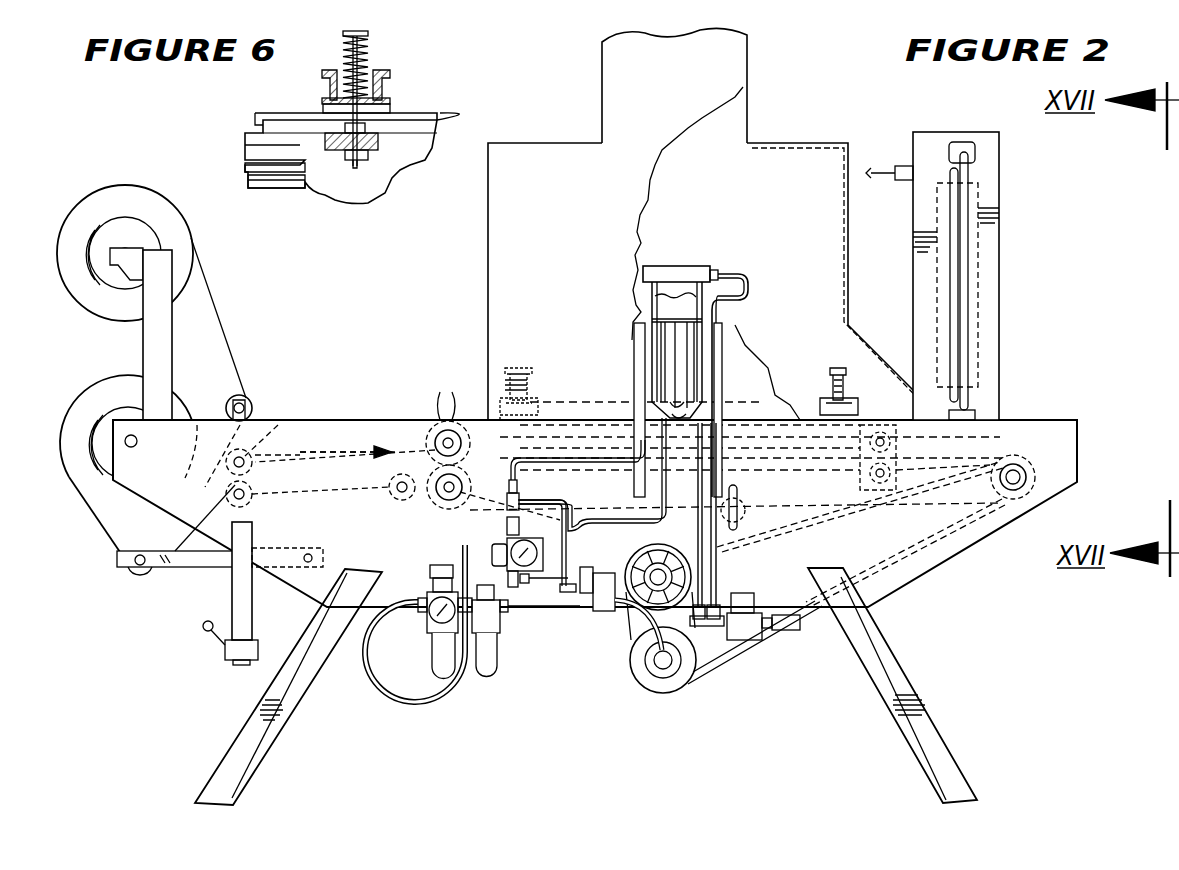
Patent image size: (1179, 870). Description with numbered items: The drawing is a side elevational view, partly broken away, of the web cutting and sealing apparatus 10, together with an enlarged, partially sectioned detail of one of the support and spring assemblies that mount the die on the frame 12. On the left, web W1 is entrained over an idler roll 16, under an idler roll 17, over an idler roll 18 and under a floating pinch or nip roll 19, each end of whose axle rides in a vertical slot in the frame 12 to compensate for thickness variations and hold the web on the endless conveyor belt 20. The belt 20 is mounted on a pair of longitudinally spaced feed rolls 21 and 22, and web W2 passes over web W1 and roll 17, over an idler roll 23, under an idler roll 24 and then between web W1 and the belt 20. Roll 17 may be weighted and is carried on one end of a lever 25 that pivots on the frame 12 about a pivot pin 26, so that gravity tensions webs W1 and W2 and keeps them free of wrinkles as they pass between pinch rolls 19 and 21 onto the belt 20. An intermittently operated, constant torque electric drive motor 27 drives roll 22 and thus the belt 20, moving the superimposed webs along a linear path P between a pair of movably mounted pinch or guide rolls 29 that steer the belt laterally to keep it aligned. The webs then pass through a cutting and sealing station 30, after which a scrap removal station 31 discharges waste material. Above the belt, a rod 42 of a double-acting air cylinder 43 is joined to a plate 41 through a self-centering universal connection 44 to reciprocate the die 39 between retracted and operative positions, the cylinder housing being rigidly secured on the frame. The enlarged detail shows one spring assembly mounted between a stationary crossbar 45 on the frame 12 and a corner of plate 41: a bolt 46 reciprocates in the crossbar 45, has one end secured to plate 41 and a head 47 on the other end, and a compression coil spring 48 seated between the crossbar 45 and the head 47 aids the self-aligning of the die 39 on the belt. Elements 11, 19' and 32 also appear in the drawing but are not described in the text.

In FIG. 2, the apparatus 10 is at (795, 100).
In FIG. 2, the supply roll support post 11 is at (252, 310).
In FIG. 6, the frame 12 is at (388, 205).
In FIG. 2, the frame 12 is at (563, 618).
In FIG. 2, the idler roll 16 is at (243, 400).
In FIG. 2, the idler roll 17 is at (130, 577).
In FIG. 2, the idler roll 18 is at (250, 452).
In FIG. 2, the floating pinch or nip roll 19 is at (425, 421).
In FIG. 2, the guide pulley 19' is at (446, 405).
In FIG. 2, the endless conveyor belt 20 is at (410, 498).
In FIG. 2, the feed roll 21 is at (440, 502).
In FIG. 2, the feed roll 22 is at (1036, 470).
In FIG. 2, the idler roll 23 is at (253, 502).
In FIG. 2, the idler roll 24 is at (318, 452).
In FIG. 2, the lever 25 is at (190, 565).
In FIG. 2, the pivot pin 26 is at (312, 556).
In FIG. 2, the electric drive motor 27 is at (620, 665).
In FIG. 2, the pinch or guide rolls 29 is at (896, 441).
In FIG. 2, the cutting and sealing station 30 is at (765, 278).
In FIG. 2, the scrap removal station 31 is at (1012, 240).
In FIG. 2, the motor mount 32 is at (752, 648).
In FIG. 6, the die 39 is at (290, 192).
In FIG. 6, the plate 41 is at (380, 143).
In FIG. 2, the plate 41 is at (598, 418).
In FIG. 2, the rod 42 is at (668, 345).
In FIG. 2, the double-acting air cylinder 43 is at (688, 258).
In FIG. 2, the universal connection 44 is at (700, 392).
In FIG. 6, the stationary crossbar 45 is at (390, 101).
In FIG. 6, the bolt 46 is at (437, 122).
In FIG. 6, the head 47 is at (343, 33).
In FIG. 6, the compression coil spring 48 is at (368, 44).
In FIG. 2, the web W1 is at (213, 288).
In FIG. 2, the web W2 is at (100, 521).
In FIG. 2, the linear path P is at (343, 440).